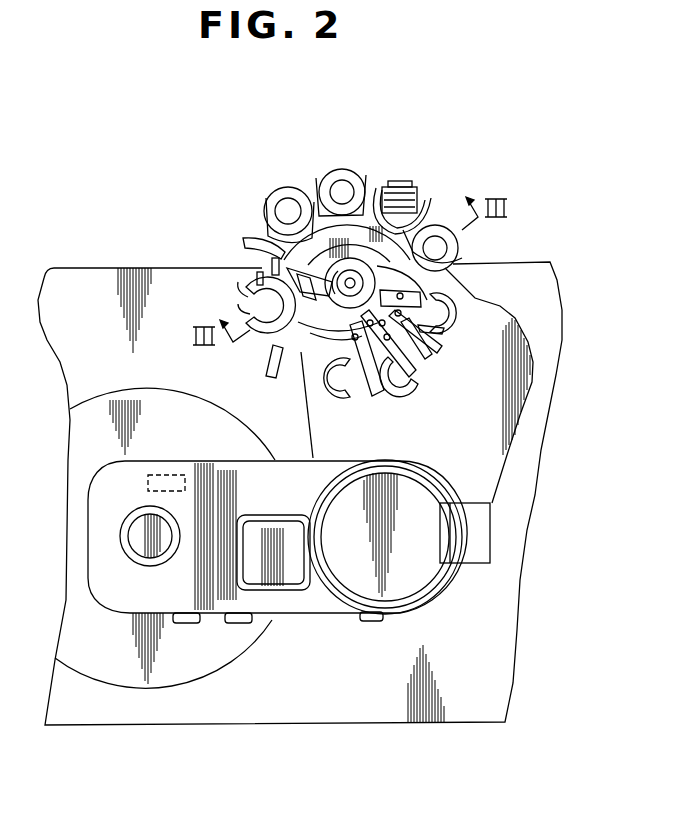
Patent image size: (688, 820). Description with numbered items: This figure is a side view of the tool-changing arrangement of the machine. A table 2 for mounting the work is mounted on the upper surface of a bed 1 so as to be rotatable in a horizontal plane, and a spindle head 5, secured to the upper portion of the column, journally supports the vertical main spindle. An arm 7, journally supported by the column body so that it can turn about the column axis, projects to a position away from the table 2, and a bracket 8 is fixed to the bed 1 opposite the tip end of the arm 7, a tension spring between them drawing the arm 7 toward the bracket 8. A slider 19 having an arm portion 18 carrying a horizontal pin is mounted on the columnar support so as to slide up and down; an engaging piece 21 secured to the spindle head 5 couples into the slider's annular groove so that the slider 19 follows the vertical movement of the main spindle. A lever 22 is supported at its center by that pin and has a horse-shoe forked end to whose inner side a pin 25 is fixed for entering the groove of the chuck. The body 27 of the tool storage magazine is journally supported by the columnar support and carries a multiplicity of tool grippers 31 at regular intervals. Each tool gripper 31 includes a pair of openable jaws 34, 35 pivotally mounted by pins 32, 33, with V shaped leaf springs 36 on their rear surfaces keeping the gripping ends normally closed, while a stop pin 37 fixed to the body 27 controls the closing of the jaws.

The bed 1 is at (310, 712).
The table 2 is at (228, 656).
The spindle head 5 is at (311, 605).
The arm 7 is at (520, 384).
The bracket 8 is at (407, 203).
The arm portion 18 is at (301, 270).
The slider 19 is at (353, 287).
The engaging piece 21 is at (150, 464).
The lever 22 is at (290, 263).
The pin 25 is at (261, 328).
The body of tool storage magazine 27 is at (300, 353).
The tool gripper 31 is at (420, 390).
The pin 32 is at (363, 380).
The pin 33 is at (420, 390).
The openable jaw 34 is at (397, 398).
The openable jaw 35 is at (441, 350).
The V shaped leaf spring 36 is at (414, 353).
The stop pin 37 is at (398, 383).